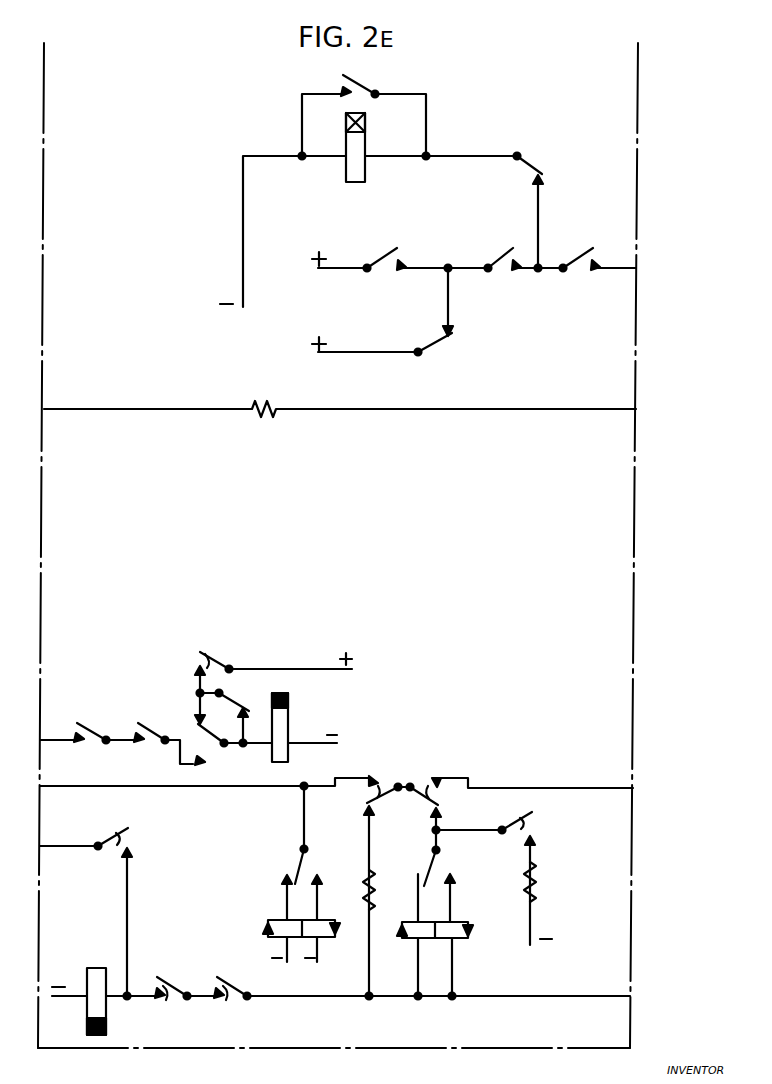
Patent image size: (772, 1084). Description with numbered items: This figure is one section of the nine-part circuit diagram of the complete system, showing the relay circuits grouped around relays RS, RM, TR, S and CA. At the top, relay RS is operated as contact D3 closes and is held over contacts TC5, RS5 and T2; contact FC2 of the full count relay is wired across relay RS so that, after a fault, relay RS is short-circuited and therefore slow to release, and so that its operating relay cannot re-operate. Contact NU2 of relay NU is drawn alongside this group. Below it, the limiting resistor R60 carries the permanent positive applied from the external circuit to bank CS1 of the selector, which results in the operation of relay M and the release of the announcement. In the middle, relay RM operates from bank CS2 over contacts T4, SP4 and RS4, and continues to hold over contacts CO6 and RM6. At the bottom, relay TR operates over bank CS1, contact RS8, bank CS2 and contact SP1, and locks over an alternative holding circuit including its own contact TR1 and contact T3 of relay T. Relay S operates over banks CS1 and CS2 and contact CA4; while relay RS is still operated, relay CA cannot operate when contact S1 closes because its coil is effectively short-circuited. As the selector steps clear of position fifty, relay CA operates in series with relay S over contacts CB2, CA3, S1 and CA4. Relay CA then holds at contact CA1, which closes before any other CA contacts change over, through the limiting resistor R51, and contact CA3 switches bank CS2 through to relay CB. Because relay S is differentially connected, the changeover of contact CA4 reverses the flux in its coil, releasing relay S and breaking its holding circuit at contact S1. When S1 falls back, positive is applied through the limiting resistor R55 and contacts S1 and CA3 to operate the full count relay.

The contact FC2 is at (364, 110).
The relay RS is at (360, 150).
The contact TC5 is at (545, 156).
The contact T2 is at (382, 248).
The contact RS5 is at (498, 248).
The contact D3 is at (582, 248).
The contact NU2 is at (445, 342).
The limiting resistor R60 is at (282, 396).
The contact RM6 is at (272, 645).
The contact CO6 is at (241, 700).
The relay RM is at (305, 727).
The contact T4 is at (85, 720).
The contact SP4 is at (146, 720).
The contact RS4 is at (210, 748).
The contact S1 is at (386, 783).
The contact CA3 is at (437, 784).
The limiting resistor R55 is at (379, 881).
The contact CA1 is at (547, 825).
The limiting resistor R51 is at (538, 888).
The contact CB2 is at (436, 875).
The relay CA is at (455, 958).
The contact SP1 is at (114, 912).
The contact CA4 is at (281, 853).
The relay S is at (268, 937).
The relay TR is at (116, 1001).
The contact TR1 is at (189, 1005).
The contact T3 is at (241, 1005).